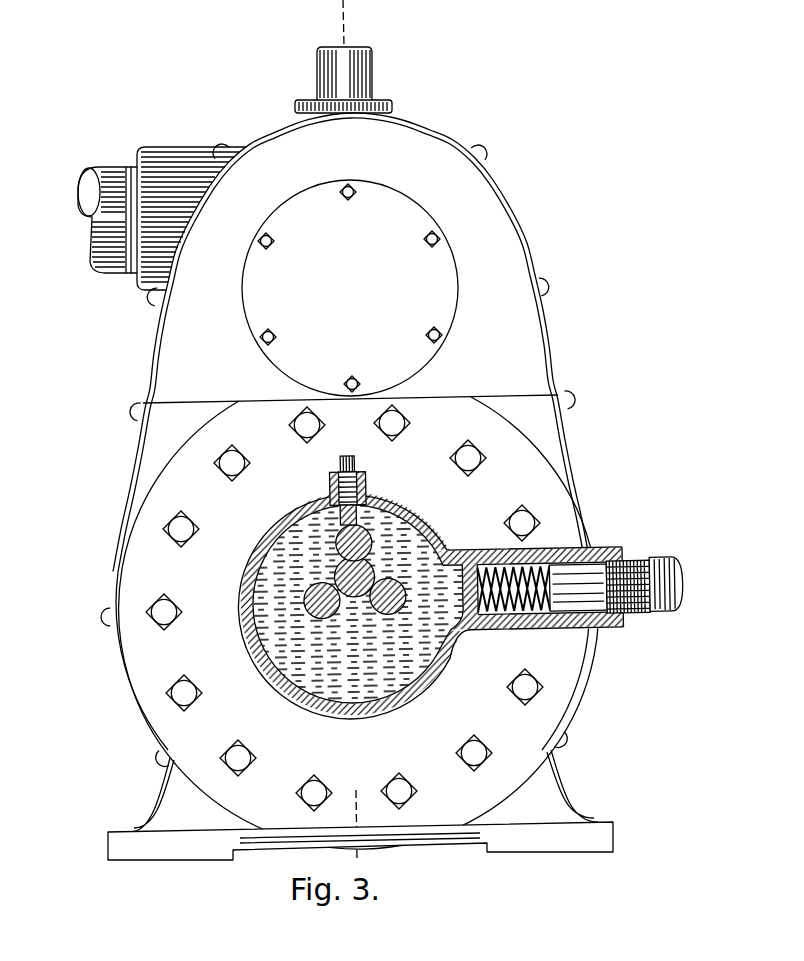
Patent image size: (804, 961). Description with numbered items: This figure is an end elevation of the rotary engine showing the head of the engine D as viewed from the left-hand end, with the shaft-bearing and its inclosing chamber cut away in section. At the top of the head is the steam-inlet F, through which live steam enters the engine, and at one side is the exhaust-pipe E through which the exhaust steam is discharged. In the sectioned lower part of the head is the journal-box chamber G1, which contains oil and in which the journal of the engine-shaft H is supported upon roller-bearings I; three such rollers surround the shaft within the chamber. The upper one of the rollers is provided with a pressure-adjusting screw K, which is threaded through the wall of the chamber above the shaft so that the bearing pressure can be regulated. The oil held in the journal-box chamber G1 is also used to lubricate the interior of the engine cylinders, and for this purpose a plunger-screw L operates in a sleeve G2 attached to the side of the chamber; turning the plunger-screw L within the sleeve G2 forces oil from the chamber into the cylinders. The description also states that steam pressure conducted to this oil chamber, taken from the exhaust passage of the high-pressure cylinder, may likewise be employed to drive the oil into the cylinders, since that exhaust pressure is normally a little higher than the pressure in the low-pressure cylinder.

The head of the engine D is at (160, 502).
The exhaust-pipe E is at (73, 205).
The steam-inlet F is at (354, 18).
The journal-box chamber G1 is at (253, 653).
The sleeve G2 is at (505, 630).
The engine-shaft H is at (340, 568).
The roller-bearings I is at (367, 542).
The pressure-adjusting screw K is at (348, 480).
The plunger-screw L is at (625, 553).